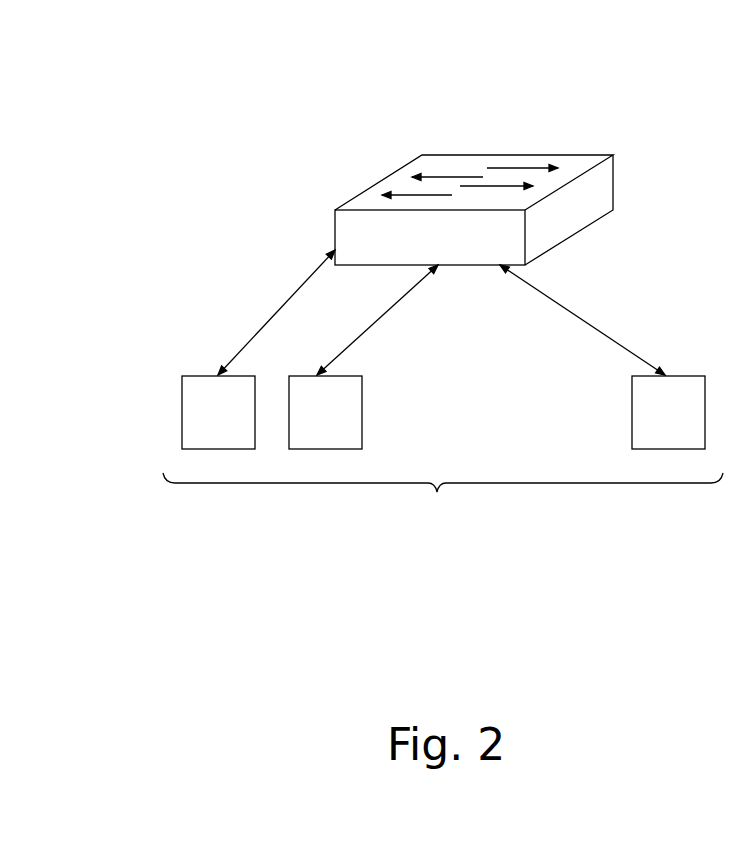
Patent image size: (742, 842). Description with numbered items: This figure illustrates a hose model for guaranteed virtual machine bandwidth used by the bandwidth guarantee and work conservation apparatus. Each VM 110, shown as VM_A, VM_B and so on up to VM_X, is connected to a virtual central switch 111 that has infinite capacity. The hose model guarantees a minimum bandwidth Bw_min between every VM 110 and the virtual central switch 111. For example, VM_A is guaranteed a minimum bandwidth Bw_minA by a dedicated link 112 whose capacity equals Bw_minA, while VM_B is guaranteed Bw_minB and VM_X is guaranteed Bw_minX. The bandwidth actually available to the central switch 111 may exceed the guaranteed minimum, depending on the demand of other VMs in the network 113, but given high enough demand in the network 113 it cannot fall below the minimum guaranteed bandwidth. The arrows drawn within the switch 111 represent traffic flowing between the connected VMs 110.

The virtual machine 110 is at (470, 527).
The virtual central switch 111 is at (587, 155).
The dedicated link 112 is at (293, 285).
The network 113 is at (118, 200).